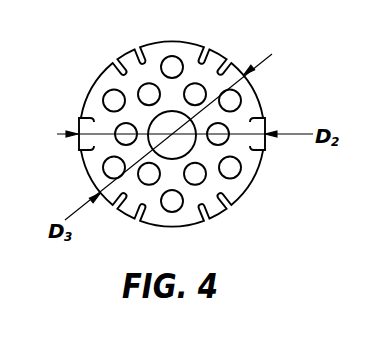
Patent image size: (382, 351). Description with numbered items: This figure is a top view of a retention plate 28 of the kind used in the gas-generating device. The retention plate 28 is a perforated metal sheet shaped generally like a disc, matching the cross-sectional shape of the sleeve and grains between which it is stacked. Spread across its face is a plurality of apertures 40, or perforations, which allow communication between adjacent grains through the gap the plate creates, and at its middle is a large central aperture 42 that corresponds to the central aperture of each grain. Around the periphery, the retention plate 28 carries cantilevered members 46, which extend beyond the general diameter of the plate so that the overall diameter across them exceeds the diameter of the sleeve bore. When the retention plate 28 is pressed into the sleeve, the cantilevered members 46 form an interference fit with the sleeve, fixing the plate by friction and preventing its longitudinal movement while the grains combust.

The retention plate 28 is at (285, 92).
The apertures 40 is at (149, 97).
The central aperture 42 is at (171, 122).
The cantilevered members 46 is at (136, 212).